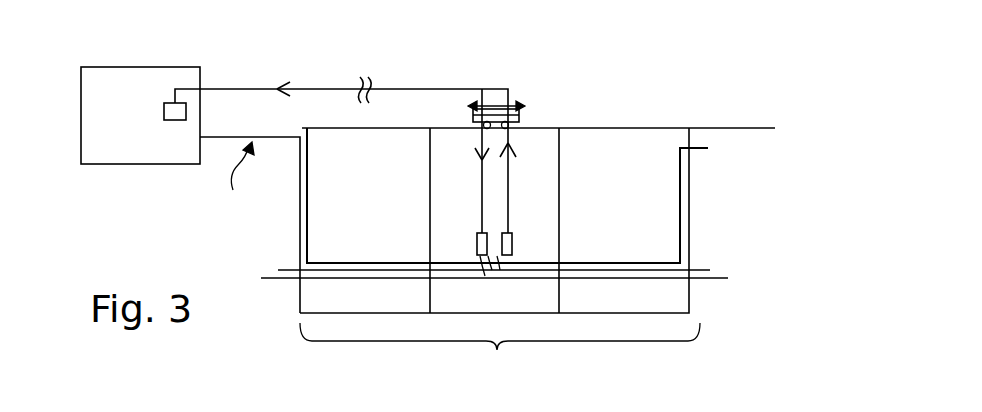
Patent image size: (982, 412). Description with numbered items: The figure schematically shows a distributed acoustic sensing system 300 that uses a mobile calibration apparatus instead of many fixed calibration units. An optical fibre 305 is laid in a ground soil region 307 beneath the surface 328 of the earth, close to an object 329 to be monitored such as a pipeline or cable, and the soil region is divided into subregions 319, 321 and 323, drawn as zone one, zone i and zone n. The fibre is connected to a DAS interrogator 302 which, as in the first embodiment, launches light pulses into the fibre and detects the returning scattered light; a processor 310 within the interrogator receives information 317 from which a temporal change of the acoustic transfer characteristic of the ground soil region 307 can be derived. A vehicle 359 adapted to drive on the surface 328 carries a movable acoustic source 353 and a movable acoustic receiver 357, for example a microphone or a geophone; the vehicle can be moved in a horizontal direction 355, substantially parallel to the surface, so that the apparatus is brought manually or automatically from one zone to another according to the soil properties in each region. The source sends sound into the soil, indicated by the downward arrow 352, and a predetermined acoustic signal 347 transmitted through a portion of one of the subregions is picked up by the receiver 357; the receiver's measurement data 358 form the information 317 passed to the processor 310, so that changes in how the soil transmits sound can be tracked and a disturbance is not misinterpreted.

The distributed acoustic sensing system 300 is at (680, 83).
The DAS interrogator 302 is at (81, 139).
The optical fibre 305 is at (300, 240).
The ground soil region 307 is at (500, 258).
The processor 310 is at (168, 103).
The information 317 is at (285, 88).
The subregion 319 is at (357, 184).
The subregion 321 is at (518, 184).
The subregion 323 is at (616, 184).
The surface of the earth 328 is at (713, 128).
The object to be monitored 329 is at (296, 283).
The predetermined acoustic signal 347 is at (495, 272).
The transmit fiber 352 is at (481, 162).
The movable acoustic source 353 is at (477, 244).
The horizontal direction 355 is at (518, 106).
The movable receiver 357 is at (512, 245).
The measurement data 358 is at (510, 143).
The vehicle 359 is at (492, 108).